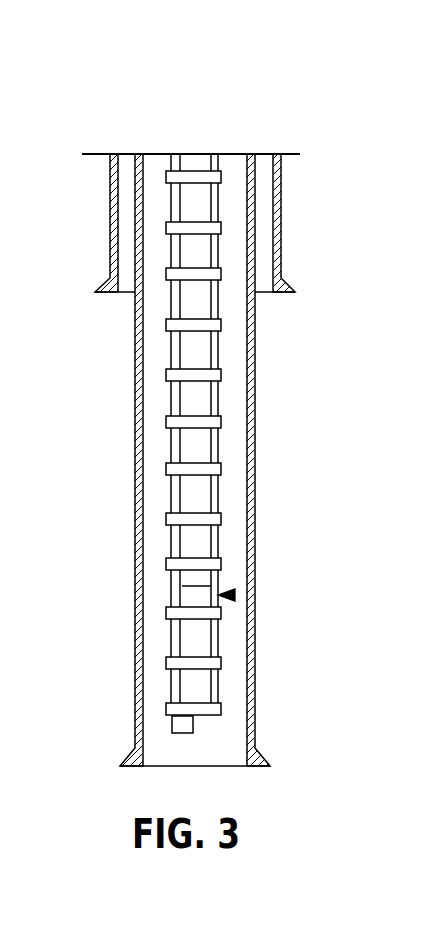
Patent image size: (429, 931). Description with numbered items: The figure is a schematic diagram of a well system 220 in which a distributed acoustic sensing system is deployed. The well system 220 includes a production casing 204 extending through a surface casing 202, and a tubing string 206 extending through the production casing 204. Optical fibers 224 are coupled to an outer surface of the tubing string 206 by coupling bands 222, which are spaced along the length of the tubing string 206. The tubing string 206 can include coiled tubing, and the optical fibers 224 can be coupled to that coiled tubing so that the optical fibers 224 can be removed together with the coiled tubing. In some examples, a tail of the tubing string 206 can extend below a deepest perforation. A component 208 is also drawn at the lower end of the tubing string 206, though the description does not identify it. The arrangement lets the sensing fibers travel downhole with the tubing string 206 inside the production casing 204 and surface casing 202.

The well system 220 is at (248, 116).
The surface casing 202 is at (296, 229).
The production casing 204 is at (268, 320).
The coupling bands 222 is at (236, 376).
The optical fibers 224 is at (198, 453).
The tubing string 206 is at (232, 541).
The end cap 208 is at (210, 728).